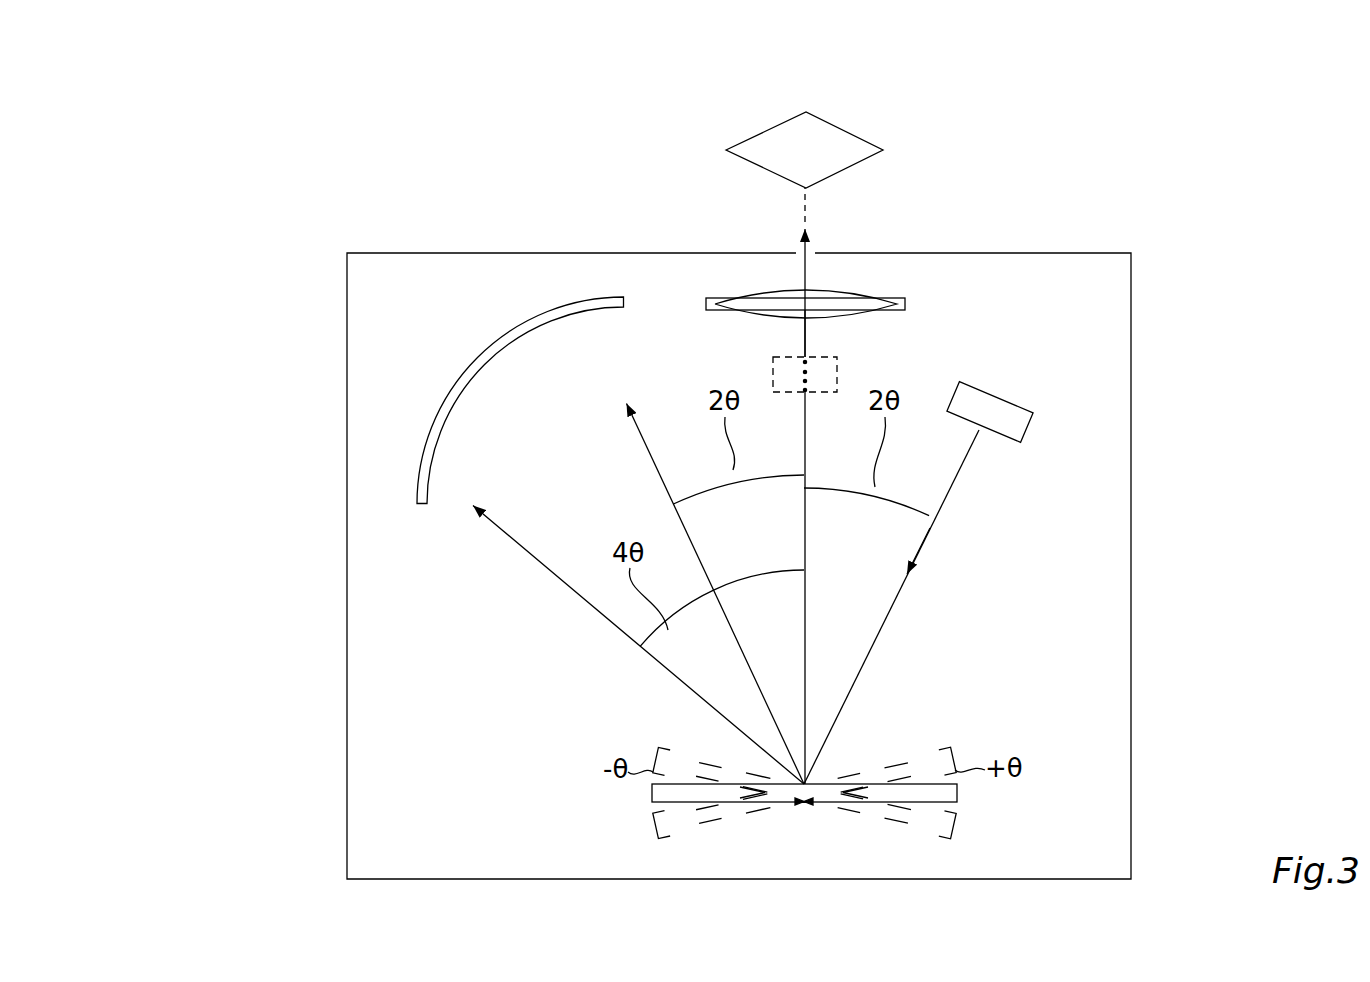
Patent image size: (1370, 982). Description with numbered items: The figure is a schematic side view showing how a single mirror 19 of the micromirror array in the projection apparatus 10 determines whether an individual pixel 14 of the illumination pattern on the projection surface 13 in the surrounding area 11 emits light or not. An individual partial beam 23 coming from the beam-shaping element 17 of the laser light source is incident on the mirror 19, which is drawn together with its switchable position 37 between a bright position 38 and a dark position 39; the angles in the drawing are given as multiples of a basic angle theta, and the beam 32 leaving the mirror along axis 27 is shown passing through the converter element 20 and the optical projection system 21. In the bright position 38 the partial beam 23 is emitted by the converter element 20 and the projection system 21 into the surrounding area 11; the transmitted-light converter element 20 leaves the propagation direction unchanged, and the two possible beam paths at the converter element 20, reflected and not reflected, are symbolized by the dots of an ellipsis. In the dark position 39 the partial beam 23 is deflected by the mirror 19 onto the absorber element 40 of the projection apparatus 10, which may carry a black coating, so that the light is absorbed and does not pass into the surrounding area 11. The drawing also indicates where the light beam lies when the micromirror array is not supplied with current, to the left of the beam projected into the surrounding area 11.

The projection apparatus 10 is at (290, 272).
The surrounding area 11 is at (453, 168).
The projection surface 13 is at (736, 114).
The pixel 14 is at (883, 150).
The beam-shaping element 17 is at (1030, 428).
The mirror 19 is at (957, 794).
The converter element 20 is at (773, 357).
The optical projection system 21 is at (905, 304).
The partial beam 23 is at (926, 540).
The optical axis 27 is at (806, 328).
The reflected light beam 32 is at (806, 432).
The position 37 is at (590, 760).
The bright position 38 is at (956, 828).
The dark position 39 is at (956, 755).
The absorber element 40 is at (475, 360).